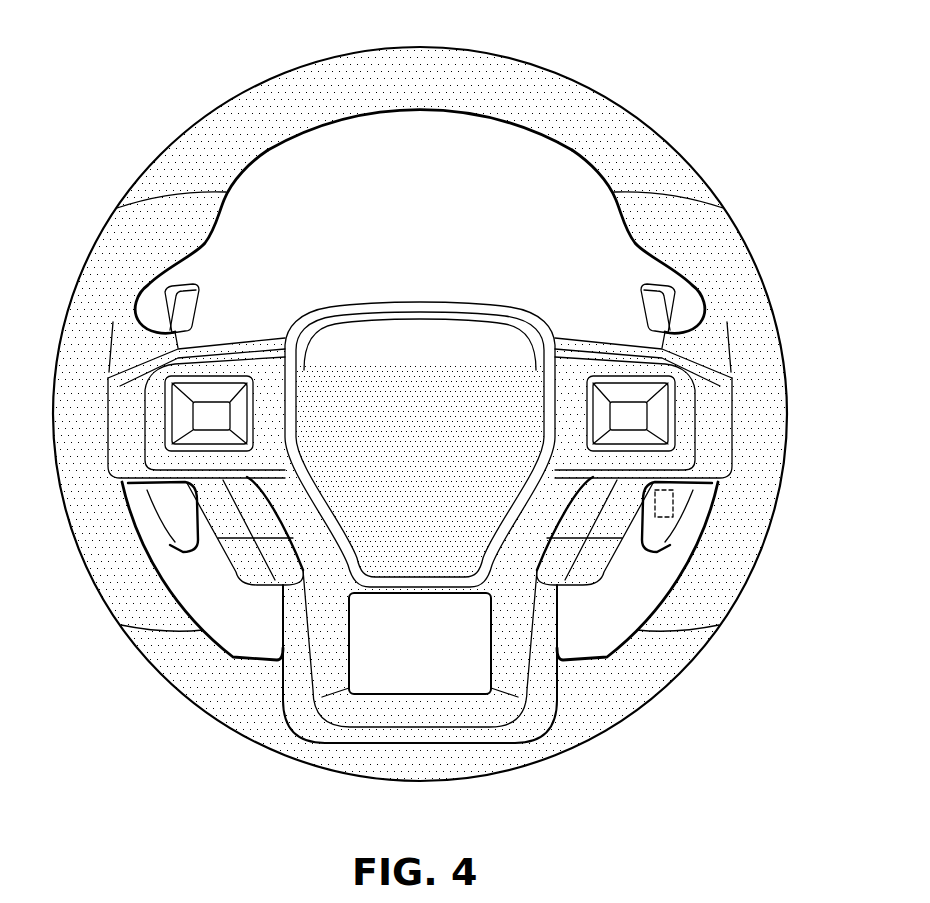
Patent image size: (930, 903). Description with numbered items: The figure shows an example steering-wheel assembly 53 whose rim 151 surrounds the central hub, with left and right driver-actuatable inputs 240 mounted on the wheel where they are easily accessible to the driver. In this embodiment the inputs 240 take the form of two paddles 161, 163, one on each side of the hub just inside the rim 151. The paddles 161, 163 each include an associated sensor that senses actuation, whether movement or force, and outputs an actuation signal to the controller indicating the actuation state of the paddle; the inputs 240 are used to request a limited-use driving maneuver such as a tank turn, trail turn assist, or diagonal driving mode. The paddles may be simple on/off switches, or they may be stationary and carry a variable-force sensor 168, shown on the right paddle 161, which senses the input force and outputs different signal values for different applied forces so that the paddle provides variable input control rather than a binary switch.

The steering wheel rim 151 is at (292, 95).
The inputs 240 is at (157, 302).
The paddle 163 is at (185, 307).
The paddle 161 is at (657, 307).
The steering wheel hub 53 is at (418, 278).
The variable-force sensor 168 is at (675, 500).